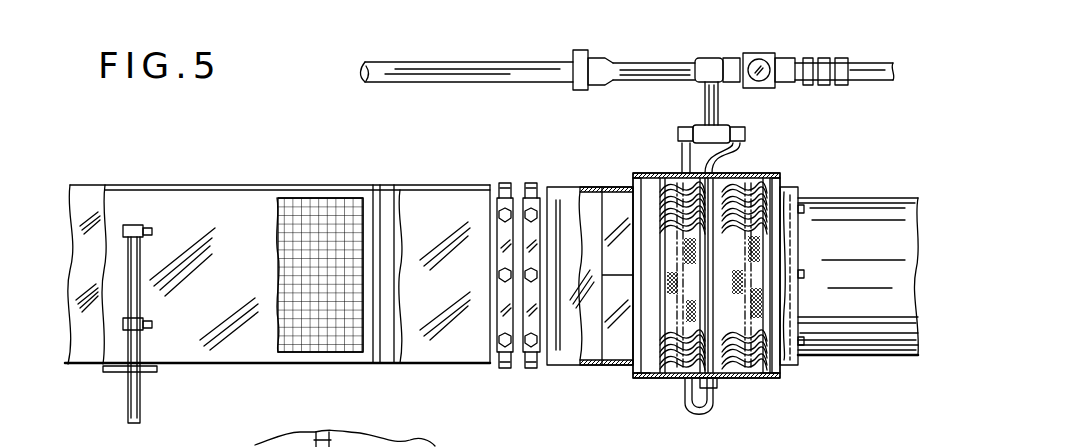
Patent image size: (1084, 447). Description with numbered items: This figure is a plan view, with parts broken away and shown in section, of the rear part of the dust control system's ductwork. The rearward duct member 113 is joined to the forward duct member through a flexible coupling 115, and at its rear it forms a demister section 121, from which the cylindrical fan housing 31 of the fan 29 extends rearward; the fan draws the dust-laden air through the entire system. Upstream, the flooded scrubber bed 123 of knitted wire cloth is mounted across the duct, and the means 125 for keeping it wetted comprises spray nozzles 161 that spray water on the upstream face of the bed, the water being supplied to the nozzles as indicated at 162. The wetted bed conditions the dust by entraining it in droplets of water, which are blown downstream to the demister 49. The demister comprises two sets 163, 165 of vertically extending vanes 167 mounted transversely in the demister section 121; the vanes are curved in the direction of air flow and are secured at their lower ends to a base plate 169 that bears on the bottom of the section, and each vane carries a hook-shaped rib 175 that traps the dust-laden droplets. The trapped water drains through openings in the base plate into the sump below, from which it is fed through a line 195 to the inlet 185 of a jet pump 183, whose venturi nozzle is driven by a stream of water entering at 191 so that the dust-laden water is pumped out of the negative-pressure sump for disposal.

The fan 29 is at (872, 357).
The fan housing 31 is at (888, 198).
The demister 49 is at (790, 247).
The rearward duct member 113 is at (572, 180).
The flexible coupling 115 is at (514, 196).
The demister section 121 is at (748, 173).
The bed 123 is at (331, 357).
The means for maintaining the bed wetted with water 125 is at (135, 217).
The spray nozzles 161 is at (152, 232).
The water supply to the nozzles 162 is at (120, 396).
The first set of vanes 163 is at (654, 380).
The second set of vanes 165 is at (767, 380).
The vanes 167 is at (781, 190).
The base plate 169 is at (445, 445).
The hook-shaped rib 175 is at (318, 432).
The pump 183 is at (720, 58).
The pump inlet 185 is at (722, 105).
The water entry 191 is at (866, 63).
The line 195 is at (683, 415).